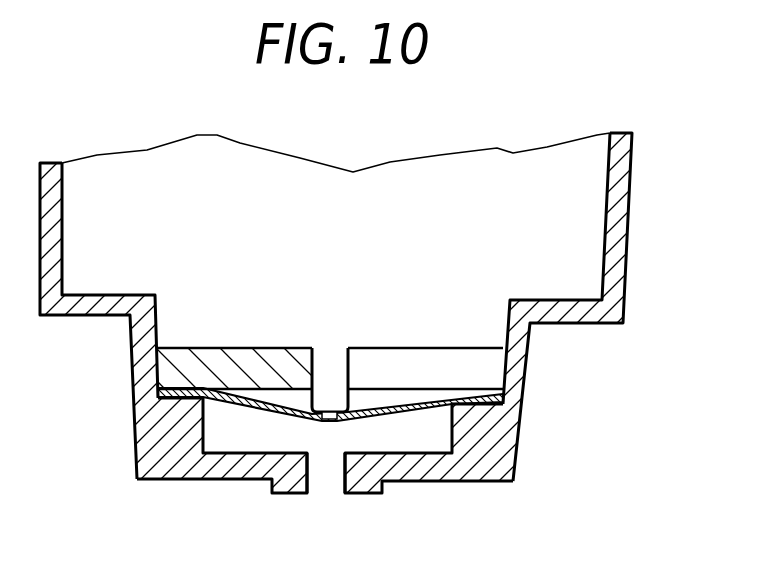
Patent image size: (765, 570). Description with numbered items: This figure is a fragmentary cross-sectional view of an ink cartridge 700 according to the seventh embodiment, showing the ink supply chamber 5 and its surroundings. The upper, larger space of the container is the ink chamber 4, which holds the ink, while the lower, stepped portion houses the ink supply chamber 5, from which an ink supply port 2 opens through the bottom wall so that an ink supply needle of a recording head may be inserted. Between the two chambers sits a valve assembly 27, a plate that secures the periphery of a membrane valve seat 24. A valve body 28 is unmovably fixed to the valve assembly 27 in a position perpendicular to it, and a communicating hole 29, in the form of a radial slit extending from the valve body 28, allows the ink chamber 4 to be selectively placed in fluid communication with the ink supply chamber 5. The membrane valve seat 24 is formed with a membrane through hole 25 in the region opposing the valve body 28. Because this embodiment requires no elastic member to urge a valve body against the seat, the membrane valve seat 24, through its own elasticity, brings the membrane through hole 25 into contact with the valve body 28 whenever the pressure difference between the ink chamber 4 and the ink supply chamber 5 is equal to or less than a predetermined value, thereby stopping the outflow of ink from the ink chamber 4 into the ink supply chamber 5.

The ink cartridge 700 is at (655, 290).
The ink chamber 4 is at (580, 235).
The ink supply chamber 5 is at (440, 438).
The ink supply port 2 is at (335, 487).
The valve assembly 27 is at (282, 360).
The valve body 28 is at (333, 397).
The communicating hole 29 is at (483, 368).
The membrane valve seat 24 is at (237, 408).
The membrane through hole 25 is at (330, 425).